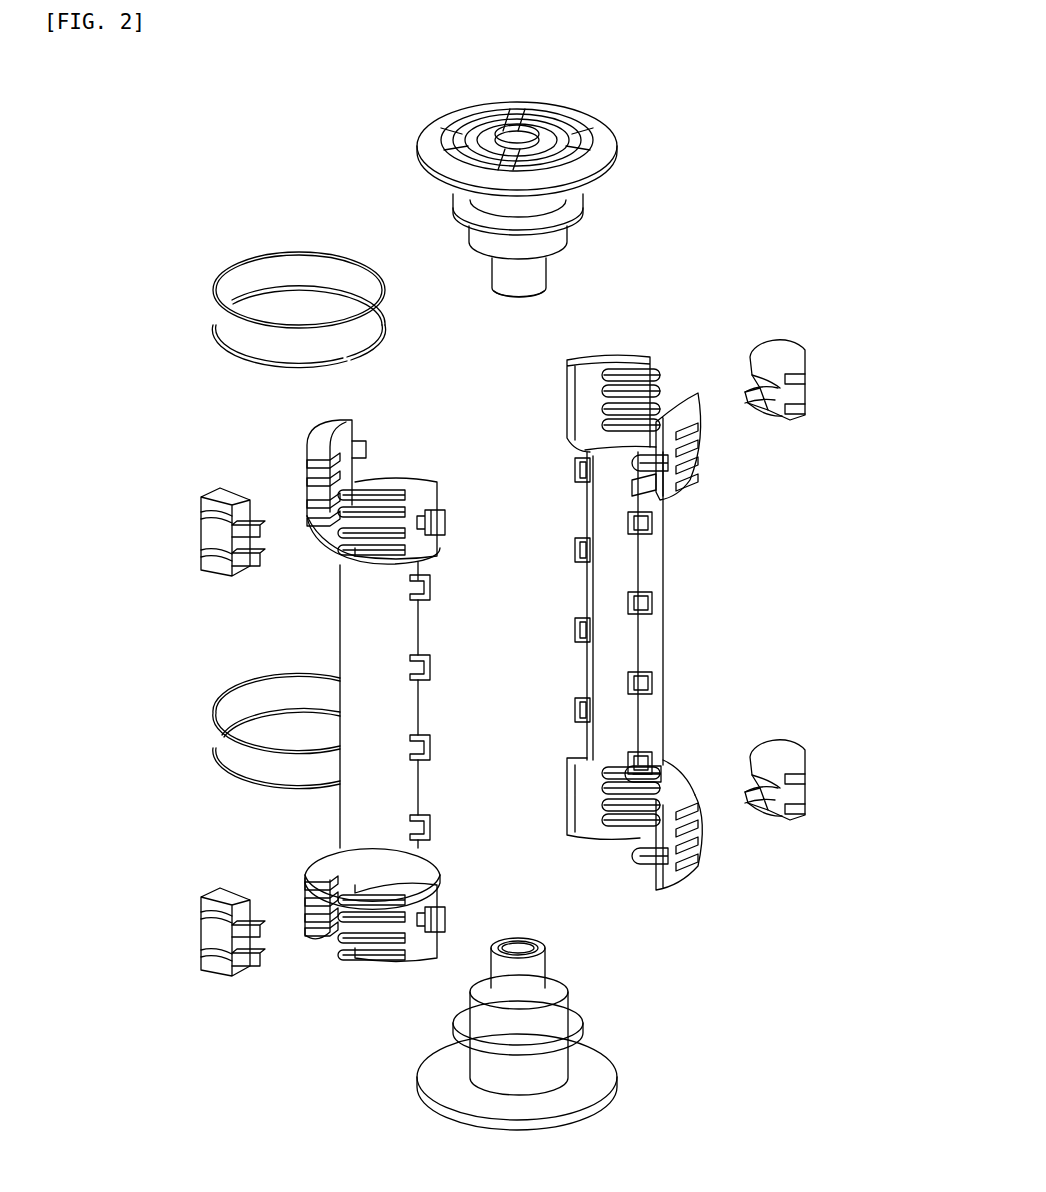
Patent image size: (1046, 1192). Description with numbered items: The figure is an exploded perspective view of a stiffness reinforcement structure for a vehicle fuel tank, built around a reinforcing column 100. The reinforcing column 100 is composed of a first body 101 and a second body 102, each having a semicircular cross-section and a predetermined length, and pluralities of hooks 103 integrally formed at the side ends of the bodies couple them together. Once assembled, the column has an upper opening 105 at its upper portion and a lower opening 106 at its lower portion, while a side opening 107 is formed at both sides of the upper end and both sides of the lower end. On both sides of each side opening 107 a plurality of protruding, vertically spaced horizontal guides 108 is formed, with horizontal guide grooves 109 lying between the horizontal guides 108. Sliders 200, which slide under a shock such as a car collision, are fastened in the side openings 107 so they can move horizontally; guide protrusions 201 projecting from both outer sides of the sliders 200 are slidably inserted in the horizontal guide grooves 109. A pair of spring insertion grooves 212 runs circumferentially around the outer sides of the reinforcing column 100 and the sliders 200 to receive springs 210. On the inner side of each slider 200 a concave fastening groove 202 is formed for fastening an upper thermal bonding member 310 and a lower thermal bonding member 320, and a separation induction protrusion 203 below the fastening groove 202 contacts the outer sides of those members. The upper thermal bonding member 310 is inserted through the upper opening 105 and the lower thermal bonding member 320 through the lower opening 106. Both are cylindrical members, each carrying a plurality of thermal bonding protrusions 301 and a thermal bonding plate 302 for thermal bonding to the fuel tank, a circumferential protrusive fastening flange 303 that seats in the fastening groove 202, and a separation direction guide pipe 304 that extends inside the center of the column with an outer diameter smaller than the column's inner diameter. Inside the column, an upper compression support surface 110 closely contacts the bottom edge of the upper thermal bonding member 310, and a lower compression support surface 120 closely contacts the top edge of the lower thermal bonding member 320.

The reinforcing column 100 is at (528, 682).
The first body 101 is at (420, 692).
The second body 102 is at (590, 568).
The hooks 103 is at (625, 528).
The upper opening 105 is at (600, 360).
The lower opening 106 is at (590, 830).
The side opening 107 is at (310, 445).
The horizontal guides 108 is at (338, 535).
The horizontal guide grooves 109 is at (318, 515).
The upper compression support surface 110 is at (590, 432).
The lower compression support surface 120 is at (575, 768).
The sliders 200 is at (496, 645).
The guide protrusions 201 is at (236, 560).
The fastening groove 202 is at (252, 512).
The separation induction protrusion 203 is at (752, 410).
The springs 210 is at (220, 328).
The spring insertion grooves 212 is at (450, 534).
The thermal bonding protrusions 301 is at (575, 112).
The thermal bonding plate 302 is at (600, 134).
The fastening flange 303 is at (580, 216).
The separation direction guide pipe 304 is at (540, 962).
The upper thermal bonding member 310 is at (576, 562).
The lower thermal bonding member 320 is at (630, 1085).